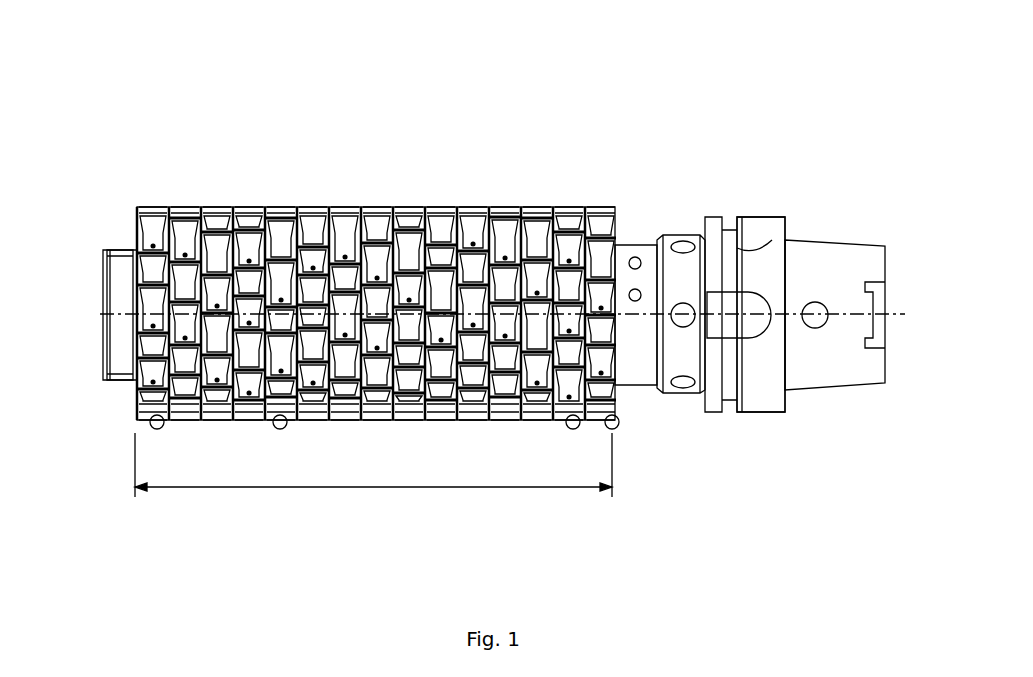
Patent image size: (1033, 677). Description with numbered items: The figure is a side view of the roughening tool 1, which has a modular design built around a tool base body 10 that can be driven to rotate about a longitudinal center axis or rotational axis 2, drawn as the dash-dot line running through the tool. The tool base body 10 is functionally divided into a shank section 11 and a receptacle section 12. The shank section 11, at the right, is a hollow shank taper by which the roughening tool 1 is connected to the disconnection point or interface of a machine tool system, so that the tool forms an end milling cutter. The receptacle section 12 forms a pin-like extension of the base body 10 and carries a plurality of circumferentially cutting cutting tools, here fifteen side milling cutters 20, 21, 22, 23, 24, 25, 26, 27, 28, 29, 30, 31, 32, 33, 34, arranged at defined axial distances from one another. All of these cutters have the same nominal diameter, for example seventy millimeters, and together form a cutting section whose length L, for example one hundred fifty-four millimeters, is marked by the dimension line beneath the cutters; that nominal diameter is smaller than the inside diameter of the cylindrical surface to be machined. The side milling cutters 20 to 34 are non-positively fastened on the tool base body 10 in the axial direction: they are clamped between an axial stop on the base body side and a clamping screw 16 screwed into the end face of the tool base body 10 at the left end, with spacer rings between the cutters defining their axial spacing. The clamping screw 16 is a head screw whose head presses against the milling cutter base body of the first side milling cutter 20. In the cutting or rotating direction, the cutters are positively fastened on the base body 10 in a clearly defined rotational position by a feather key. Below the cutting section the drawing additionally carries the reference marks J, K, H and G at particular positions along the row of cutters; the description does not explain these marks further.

The roughening tool 1 is at (867, 133).
The rotational axis 2 is at (893, 312).
The tool base body 10 is at (720, 194).
The shank section 11 is at (759, 398).
The receptacle section 12 is at (132, 117).
The clamping screw 16 is at (120, 285).
The first side milling cutter 20 is at (153, 207).
The side milling cutter 21 is at (185, 207).
The side milling cutter 22 is at (217, 207).
The side milling cutter 23 is at (249, 207).
The side milling cutter 24 is at (281, 207).
The side milling cutter 25 is at (313, 207).
The side milling cutter 26 is at (345, 207).
The side milling cutter 27 is at (377, 207).
The side milling cutter 28 is at (409, 207).
The side milling cutter 29 is at (441, 207).
The side milling cutter 30 is at (473, 207).
The side milling cutter 31 is at (505, 207).
The side milling cutter 32 is at (537, 207).
The side milling cutter 33 is at (569, 207).
The side milling cutter 34 is at (601, 207).
The length of cutting section L is at (373, 490).
The position J is at (163, 428).
The position K is at (286, 428).
The position H is at (567, 428).
The position G is at (618, 428).